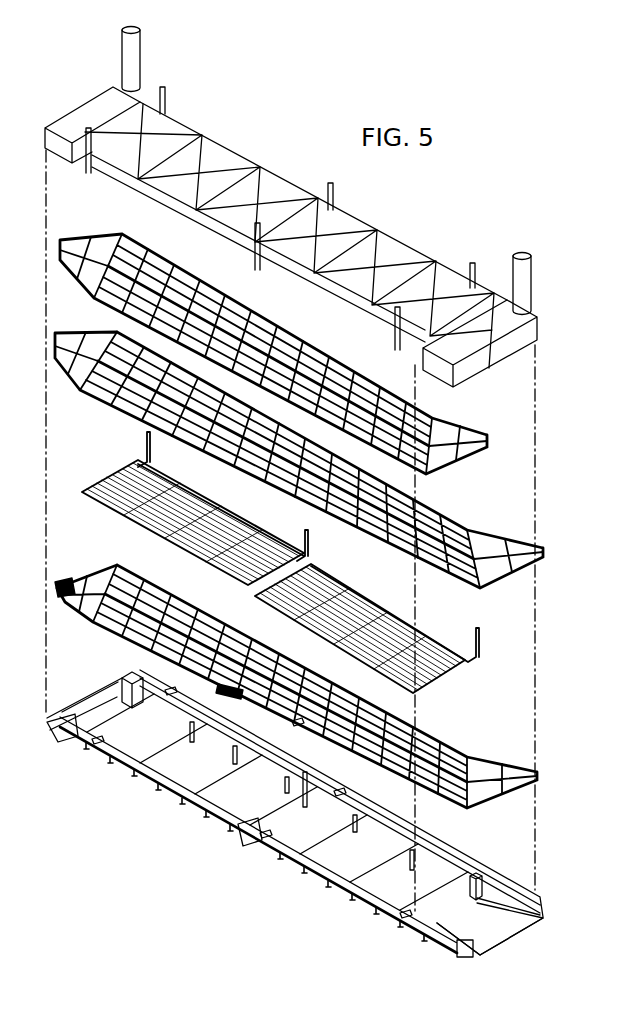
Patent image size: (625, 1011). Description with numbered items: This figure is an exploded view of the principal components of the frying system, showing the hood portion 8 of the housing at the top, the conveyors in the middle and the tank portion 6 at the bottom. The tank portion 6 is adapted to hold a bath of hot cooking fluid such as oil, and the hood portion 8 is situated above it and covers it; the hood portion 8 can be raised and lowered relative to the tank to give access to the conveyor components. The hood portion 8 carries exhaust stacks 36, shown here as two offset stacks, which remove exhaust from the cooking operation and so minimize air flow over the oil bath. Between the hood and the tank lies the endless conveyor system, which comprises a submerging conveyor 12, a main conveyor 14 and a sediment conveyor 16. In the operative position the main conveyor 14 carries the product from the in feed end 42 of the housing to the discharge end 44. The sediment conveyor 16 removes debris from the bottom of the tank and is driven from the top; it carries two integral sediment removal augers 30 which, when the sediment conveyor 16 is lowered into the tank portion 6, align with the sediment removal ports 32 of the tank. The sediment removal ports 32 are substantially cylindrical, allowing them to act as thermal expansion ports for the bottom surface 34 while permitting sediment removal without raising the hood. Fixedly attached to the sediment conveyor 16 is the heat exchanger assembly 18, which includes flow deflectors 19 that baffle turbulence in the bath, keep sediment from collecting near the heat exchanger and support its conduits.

The tank portion 6 is at (481, 870).
The hood portion 8 is at (352, 227).
The submerging conveyor 12 is at (435, 415).
The main conveyor 14 is at (463, 524).
The sediment conveyor 16 is at (528, 768).
The heat exchanger assembly 18 is at (447, 678).
The flow deflectors 19 is at (217, 518).
The sediment removal augers 30 is at (91, 572).
The sediment removal ports 32 is at (57, 733).
The bottom surface 34 is at (235, 791).
The exhaust stack 36 is at (140, 64).
The in feed end 42 is at (92, 691).
The discharge end 44 is at (526, 945).